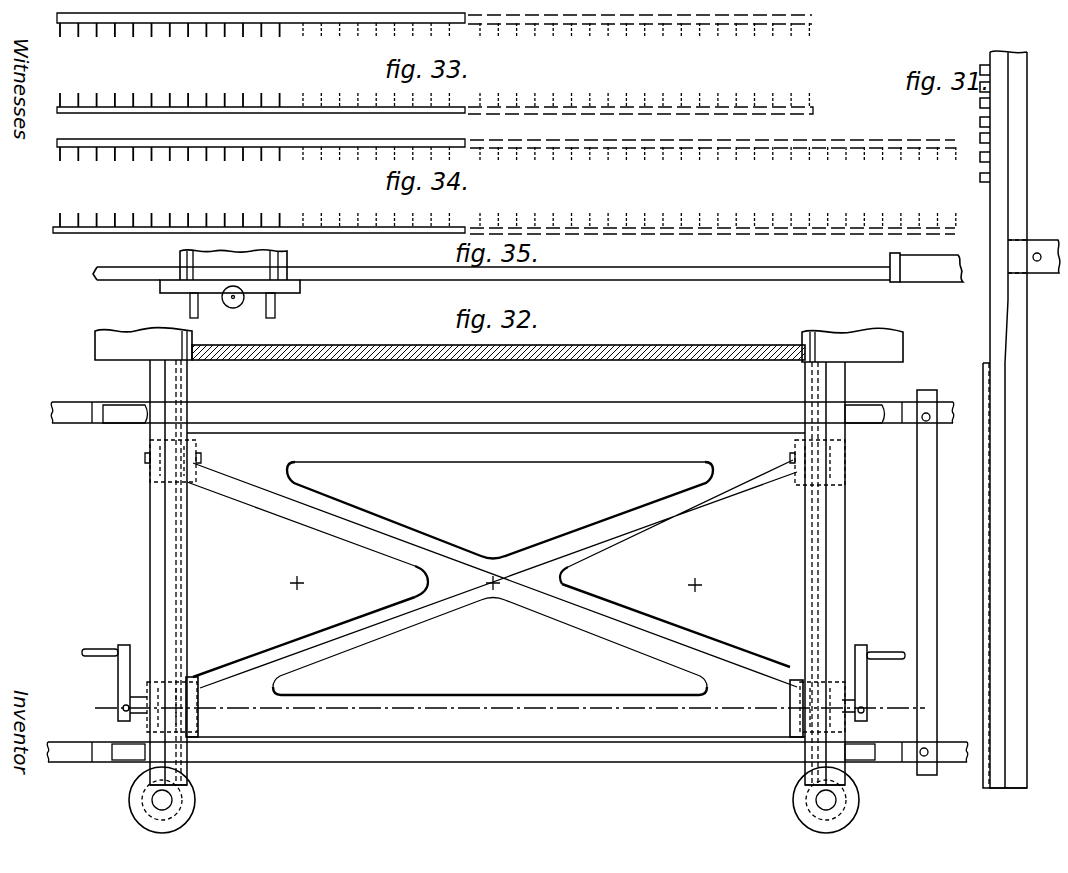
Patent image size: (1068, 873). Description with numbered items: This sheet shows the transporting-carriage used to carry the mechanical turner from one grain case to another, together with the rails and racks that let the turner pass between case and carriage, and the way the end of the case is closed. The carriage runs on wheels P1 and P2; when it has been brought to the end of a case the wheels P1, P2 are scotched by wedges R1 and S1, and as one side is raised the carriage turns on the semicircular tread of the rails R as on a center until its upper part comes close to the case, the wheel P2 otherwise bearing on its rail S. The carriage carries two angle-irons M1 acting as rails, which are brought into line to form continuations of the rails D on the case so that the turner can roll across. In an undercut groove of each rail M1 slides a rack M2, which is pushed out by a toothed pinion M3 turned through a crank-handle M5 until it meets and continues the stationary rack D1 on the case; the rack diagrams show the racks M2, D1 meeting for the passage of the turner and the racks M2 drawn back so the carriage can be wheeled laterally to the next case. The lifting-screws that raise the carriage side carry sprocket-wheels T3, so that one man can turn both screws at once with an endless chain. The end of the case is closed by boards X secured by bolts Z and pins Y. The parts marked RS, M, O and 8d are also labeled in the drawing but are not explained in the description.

In FIG. 33, the stationary rack D1 is at (261, 70).
In FIG. 34, the stationary rack D1 is at (259, 187).
In FIG. 33, the sliding rack M2 is at (640, 71).
In FIG. 34, the sliding rack M2 is at (713, 187).
In FIG. 31, the sliding rack M2 is at (1014, 282).
In FIG. 31, the case rail D is at (1003, 419).
In FIG. 32, the angle-iron rail M1 is at (497, 776).
In FIG. 31, the angle-iron rail M1 is at (1005, 575).
In FIG. 35, the board X is at (528, 276).
In FIG. 32, the board X is at (499, 345).
In FIG. 35, the bolt Z is at (233, 265).
In FIG. 35, the pin Y is at (230, 299).
In FIG. 32, the rail R is at (502, 417).
In FIG. 32, the wedge R1 is at (501, 415).
In FIG. 32, the wheel P1 is at (494, 414).
In FIG. 32, the rail S is at (507, 749).
In FIG. 32, the wedge S1 is at (507, 753).
In FIG. 32, the wheel P2 is at (493, 752).
In FIG. 32, the connecting bar RS is at (921, 582).
In FIG. 32, the upright post M is at (492, 572).
In FIG. 32, the toothed pinion M3 is at (495, 588).
In FIG. 32, the crank-handle M5 is at (481, 683).
In FIG. 32, the sprocket-wheel T3 is at (494, 800).
In FIG. 32, the diagonal brace bars O is at (492, 573).
In FIG. 32, the lattice plate 8d is at (491, 578).